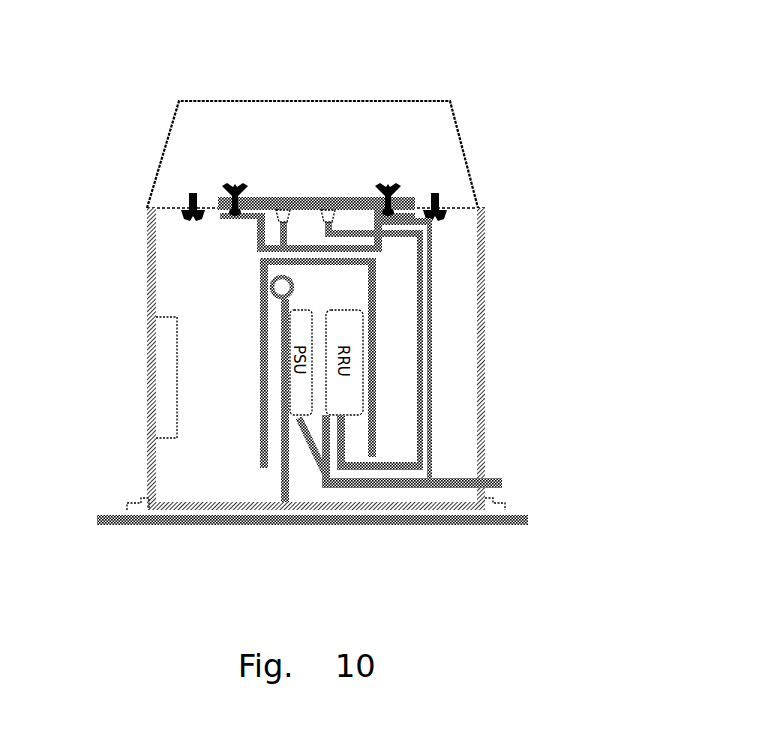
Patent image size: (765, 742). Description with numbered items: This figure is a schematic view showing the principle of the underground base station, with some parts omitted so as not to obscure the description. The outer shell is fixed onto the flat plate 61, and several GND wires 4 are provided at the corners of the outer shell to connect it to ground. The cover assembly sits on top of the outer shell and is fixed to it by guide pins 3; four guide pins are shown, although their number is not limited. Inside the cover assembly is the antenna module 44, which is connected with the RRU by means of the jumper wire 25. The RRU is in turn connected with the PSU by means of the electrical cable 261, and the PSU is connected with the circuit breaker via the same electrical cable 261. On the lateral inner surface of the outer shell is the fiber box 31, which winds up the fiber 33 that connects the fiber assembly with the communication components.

The guide pin 3 is at (442, 196).
The antenna module 44 is at (283, 210).
The jumper wire 25 is at (430, 353).
The fiber box 31 is at (167, 371).
The fiber 33 is at (455, 477).
The electrical cable 261 is at (317, 462).
The flat plate 61 is at (105, 517).
The GND wire 4 is at (135, 510).